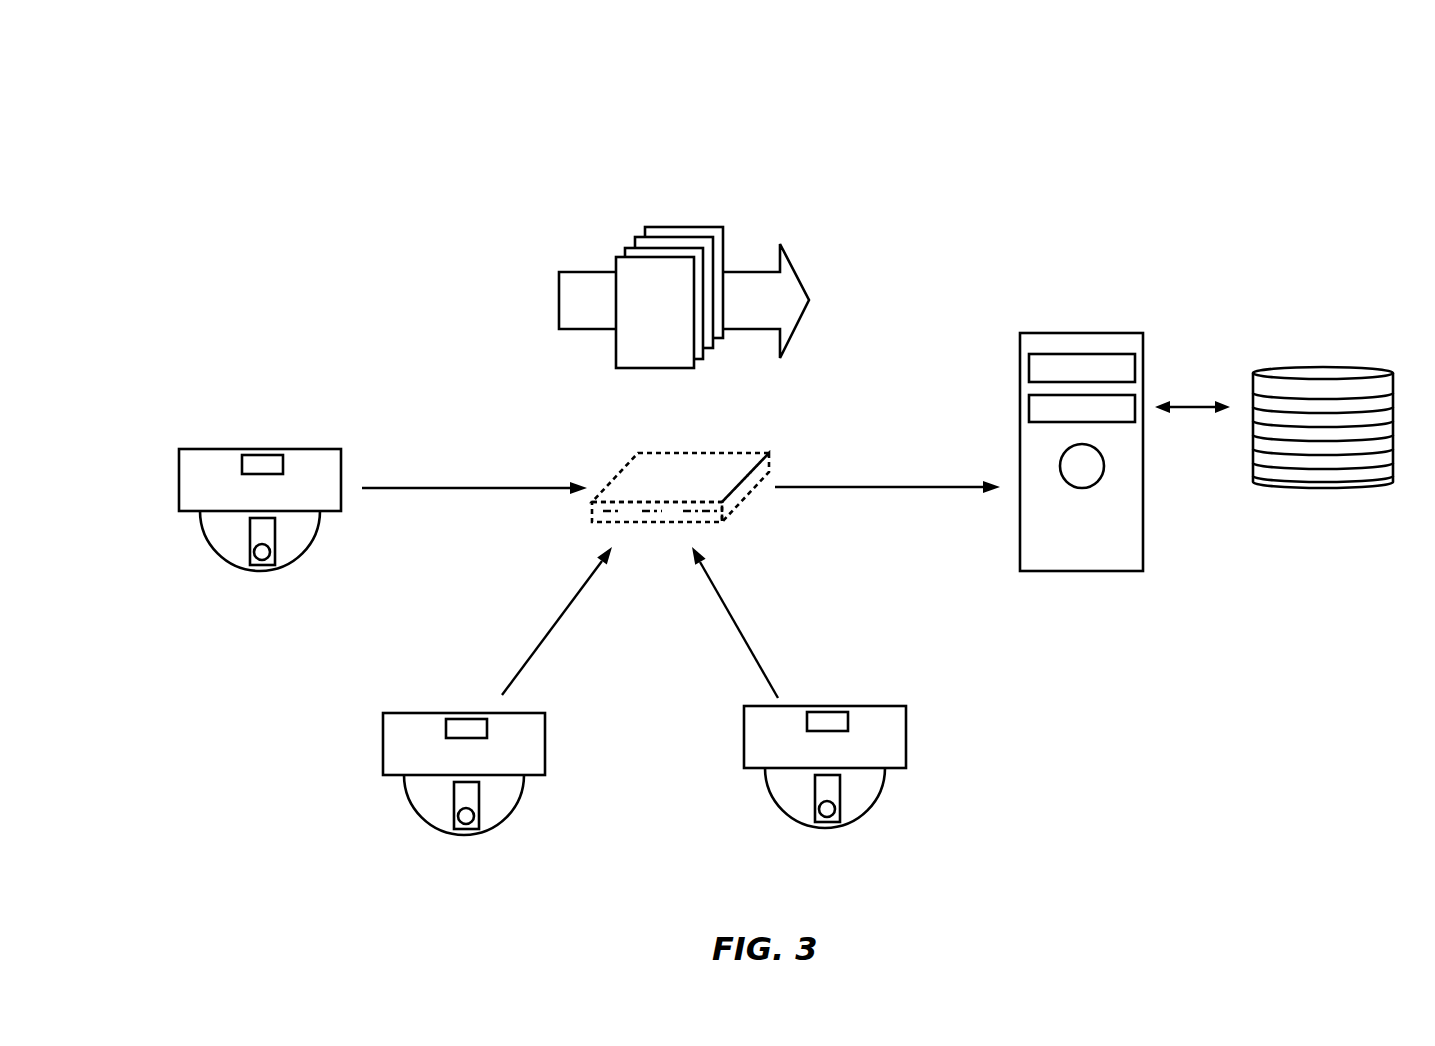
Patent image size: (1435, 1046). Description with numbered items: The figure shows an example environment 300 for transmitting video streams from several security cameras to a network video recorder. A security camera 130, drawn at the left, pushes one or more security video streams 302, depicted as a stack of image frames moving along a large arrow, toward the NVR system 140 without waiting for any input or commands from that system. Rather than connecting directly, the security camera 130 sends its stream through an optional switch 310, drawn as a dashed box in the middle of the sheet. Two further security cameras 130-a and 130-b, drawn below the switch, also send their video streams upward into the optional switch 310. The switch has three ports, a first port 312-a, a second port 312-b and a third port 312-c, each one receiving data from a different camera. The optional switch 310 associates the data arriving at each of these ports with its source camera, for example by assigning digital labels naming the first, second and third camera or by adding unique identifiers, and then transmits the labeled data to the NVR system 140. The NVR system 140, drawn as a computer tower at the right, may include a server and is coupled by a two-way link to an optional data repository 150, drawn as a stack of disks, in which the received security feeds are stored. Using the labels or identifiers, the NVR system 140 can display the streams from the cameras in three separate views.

The environment 300 is at (188, 114).
The security video streams 302 is at (606, 215).
The security camera 130 is at (208, 449).
The camera 130-a is at (383, 760).
The second security camera 130-b is at (744, 757).
The optional switch 310 is at (620, 472).
The first port 312-a is at (603, 511).
The second port 312-b is at (658, 511).
The third port 312-c is at (700, 511).
The NVR system 140 is at (1143, 488).
The data repository 150 is at (1337, 488).